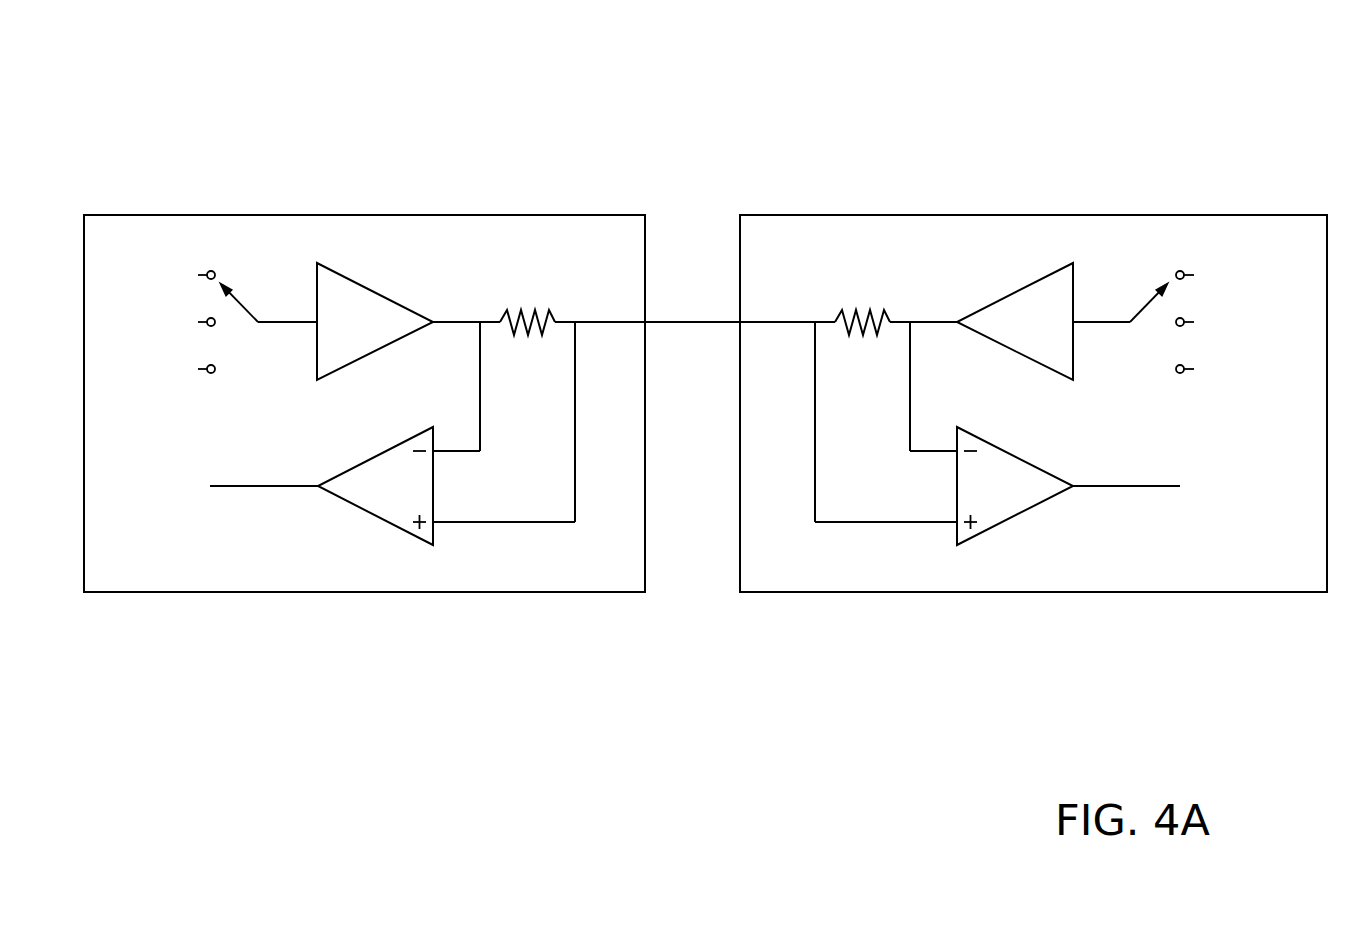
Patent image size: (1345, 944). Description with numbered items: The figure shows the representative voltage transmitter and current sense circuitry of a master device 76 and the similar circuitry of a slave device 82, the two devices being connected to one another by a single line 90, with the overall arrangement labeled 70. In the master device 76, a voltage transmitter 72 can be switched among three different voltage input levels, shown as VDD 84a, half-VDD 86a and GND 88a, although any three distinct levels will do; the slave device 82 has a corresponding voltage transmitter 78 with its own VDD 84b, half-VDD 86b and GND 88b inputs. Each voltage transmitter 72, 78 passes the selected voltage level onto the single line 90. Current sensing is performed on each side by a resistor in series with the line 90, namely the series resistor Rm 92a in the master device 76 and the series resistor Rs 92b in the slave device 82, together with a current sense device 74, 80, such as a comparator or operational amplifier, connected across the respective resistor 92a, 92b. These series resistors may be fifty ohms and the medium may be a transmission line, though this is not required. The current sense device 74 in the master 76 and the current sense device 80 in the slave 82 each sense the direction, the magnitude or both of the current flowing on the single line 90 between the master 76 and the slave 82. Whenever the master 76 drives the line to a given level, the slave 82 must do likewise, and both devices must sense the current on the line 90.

The communication system 70 is at (160, 82).
The voltage transmitter 72 is at (392, 298).
The current sense 74 is at (345, 470).
The master device 76 is at (445, 585).
The voltage transmitter 78 is at (978, 308).
The current sense 80 is at (1040, 468).
The slave device 82 is at (1116, 585).
The VDD 84a is at (170, 258).
The VDD 84b is at (1244, 268).
The VDD/2 86a is at (108, 338).
The VDD/2 86b is at (1268, 314).
The GND 88a is at (133, 385).
The GND 88b is at (1268, 376).
The single line 90 is at (660, 322).
The resistor Rm 92a is at (548, 298).
The resistor Rs 92b is at (848, 287).